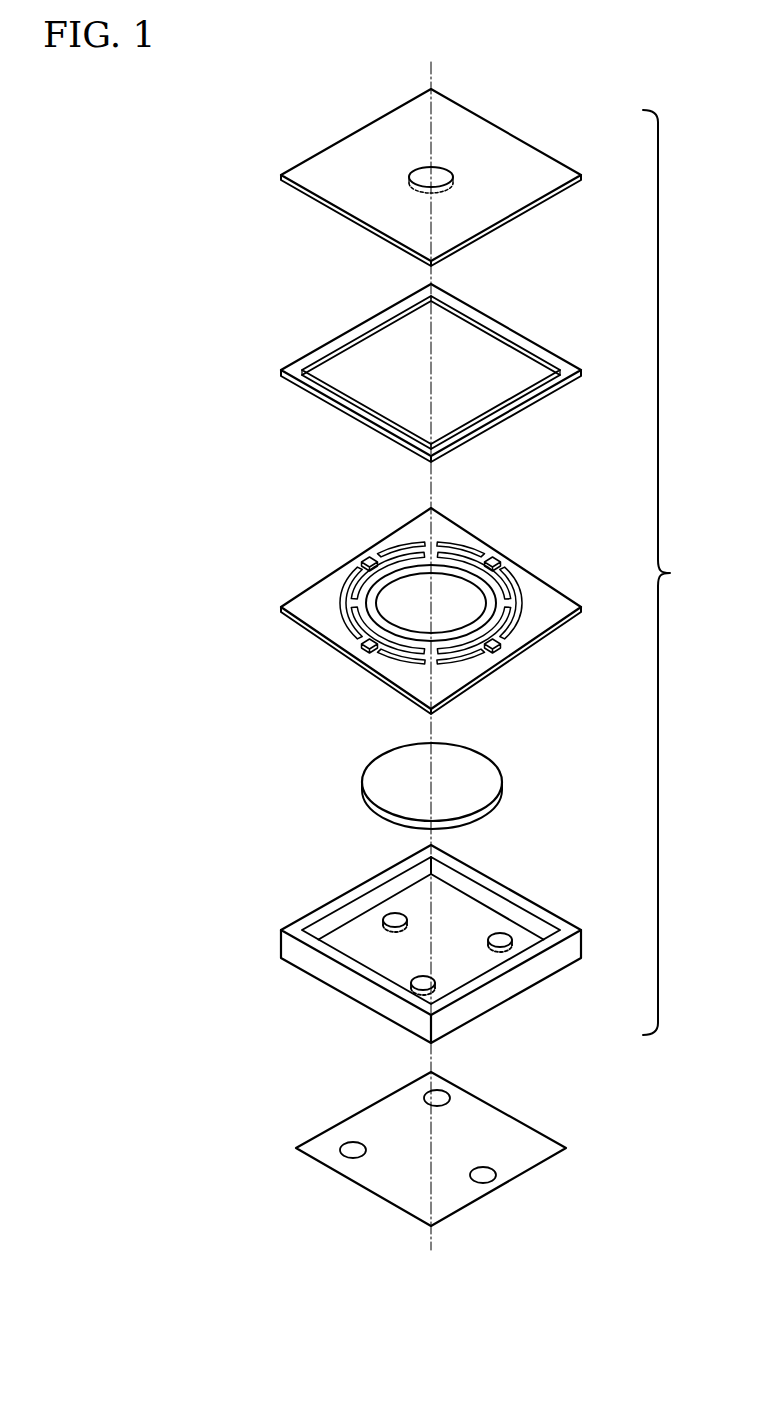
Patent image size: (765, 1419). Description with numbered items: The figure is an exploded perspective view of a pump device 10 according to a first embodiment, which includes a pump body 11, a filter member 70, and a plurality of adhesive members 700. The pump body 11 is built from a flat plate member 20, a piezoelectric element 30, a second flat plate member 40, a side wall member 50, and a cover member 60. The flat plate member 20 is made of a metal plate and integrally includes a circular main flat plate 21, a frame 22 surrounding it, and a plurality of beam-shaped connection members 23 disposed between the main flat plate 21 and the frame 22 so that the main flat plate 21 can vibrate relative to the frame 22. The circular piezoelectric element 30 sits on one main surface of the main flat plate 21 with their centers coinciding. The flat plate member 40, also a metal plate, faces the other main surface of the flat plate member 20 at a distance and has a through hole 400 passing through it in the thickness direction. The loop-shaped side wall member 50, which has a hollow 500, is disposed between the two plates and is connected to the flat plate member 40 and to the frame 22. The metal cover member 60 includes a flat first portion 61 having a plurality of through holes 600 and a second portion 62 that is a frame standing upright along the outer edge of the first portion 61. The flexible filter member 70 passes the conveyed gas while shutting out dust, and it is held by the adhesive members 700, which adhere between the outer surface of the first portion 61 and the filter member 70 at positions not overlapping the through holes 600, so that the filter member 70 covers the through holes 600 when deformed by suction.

The pump device 10 is at (598, 118).
The pump body 11 is at (675, 572).
The flat plate member 20 is at (432, 599).
The main flat plate 21 is at (395, 593).
The frame 22 is at (543, 597).
The connection members 23 is at (505, 633).
The piezoelectric element 30 is at (490, 780).
The flat plate member 40 is at (436, 170).
The through hole 400 is at (437, 175).
The side wall member 50 is at (438, 373).
The hollow 500 is at (487, 342).
The cover member 60 is at (460, 944).
The first portion 61 is at (475, 970).
The second portion 62 is at (527, 973).
The through holes 600 is at (427, 980).
The filter member 70 is at (426, 1138).
The adhesive members 700 is at (347, 1147).